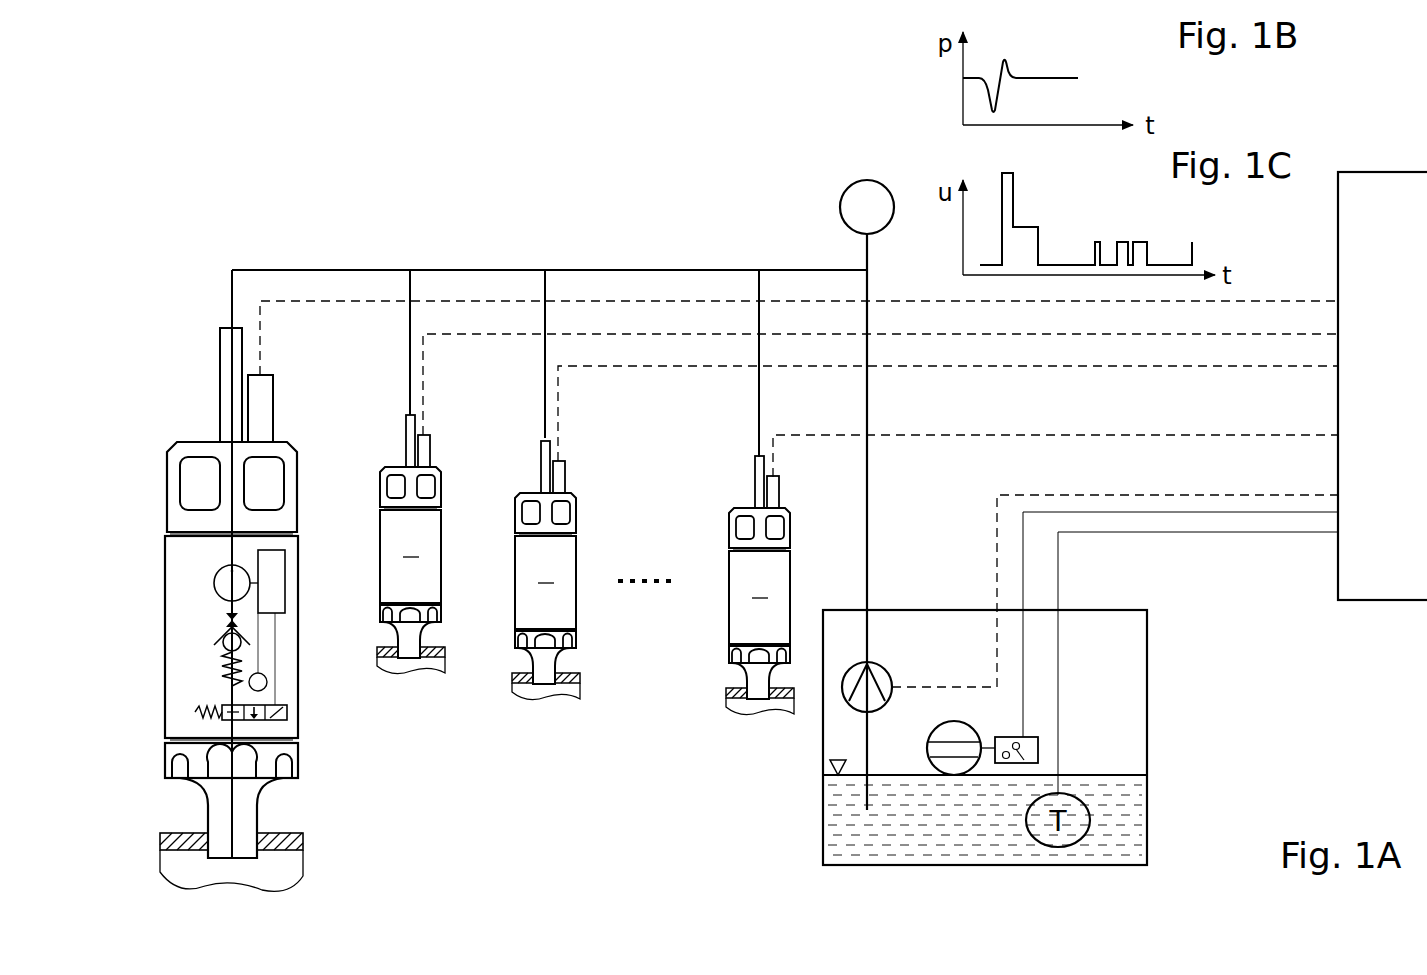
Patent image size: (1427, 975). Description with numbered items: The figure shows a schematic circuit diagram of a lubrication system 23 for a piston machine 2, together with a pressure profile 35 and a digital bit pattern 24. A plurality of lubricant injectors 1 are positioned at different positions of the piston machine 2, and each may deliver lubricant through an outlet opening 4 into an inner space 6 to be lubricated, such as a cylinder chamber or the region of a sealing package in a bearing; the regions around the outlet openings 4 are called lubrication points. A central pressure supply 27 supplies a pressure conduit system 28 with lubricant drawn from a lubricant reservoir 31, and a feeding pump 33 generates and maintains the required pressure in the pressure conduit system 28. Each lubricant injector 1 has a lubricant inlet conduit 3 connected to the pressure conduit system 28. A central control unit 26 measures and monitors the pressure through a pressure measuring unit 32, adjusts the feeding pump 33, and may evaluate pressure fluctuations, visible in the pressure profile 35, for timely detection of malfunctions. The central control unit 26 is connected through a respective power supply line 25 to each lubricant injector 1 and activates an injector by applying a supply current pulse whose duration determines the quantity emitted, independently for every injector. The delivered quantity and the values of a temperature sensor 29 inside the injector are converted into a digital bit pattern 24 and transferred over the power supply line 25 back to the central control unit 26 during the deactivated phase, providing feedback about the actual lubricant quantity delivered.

In FIG. 1A, the lubricant injector 1 is at (163, 592).
In FIG. 1A, the piston machine 2 is at (180, 840).
In FIG. 1A, the lubricant inlet conduit 3 is at (218, 361).
In FIG. 1A, the outlet opening 4 is at (232, 858).
In FIG. 1A, the inner space 6 is at (282, 867).
In FIG. 1A, the lubrication system 23 is at (283, 212).
In FIG. 1C, the digital bit pattern 24 is at (1055, 222).
In FIG. 1A, the power supply line 25 is at (347, 302).
In FIG. 1A, the central control unit 26 is at (1385, 172).
In FIG. 1A, the central pressure supply 27 is at (823, 832).
In FIG. 1A, the pressure conduit system 28 is at (467, 268).
In FIG. 1A, the temperature sensor 29 is at (267, 683).
In FIG. 1A, the lubricant reservoir 31 is at (958, 822).
In FIG. 1A, the pressure measuring unit 32 is at (846, 188).
In FIG. 1A, the feeding pump 33 is at (892, 673).
In FIG. 1B, the pressure profile 35 is at (1045, 67).